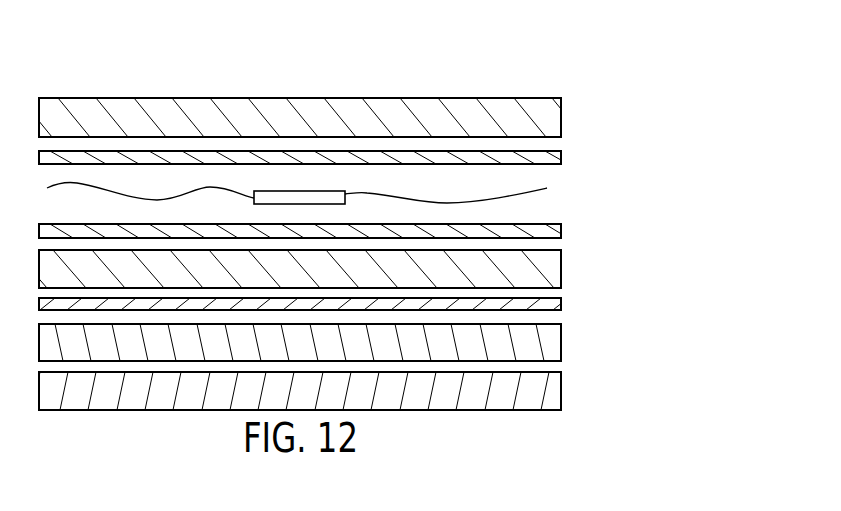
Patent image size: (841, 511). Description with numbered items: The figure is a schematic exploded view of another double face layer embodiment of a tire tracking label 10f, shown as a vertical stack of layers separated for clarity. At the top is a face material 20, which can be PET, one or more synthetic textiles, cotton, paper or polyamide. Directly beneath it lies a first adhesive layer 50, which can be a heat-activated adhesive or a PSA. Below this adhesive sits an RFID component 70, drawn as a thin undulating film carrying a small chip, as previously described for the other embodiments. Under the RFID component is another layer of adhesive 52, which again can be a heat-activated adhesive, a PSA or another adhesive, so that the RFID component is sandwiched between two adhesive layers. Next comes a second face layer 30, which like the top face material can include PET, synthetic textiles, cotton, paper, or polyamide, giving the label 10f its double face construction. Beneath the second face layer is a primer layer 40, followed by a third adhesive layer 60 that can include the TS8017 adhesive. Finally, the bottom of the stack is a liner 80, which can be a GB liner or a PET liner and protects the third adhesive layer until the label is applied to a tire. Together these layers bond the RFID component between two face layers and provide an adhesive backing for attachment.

The label 10f is at (658, 110).
The face material 20 is at (561, 117).
The first adhesive layer 50 is at (561, 158).
The RFID component 70 is at (572, 193).
The layer of adhesive 52 is at (561, 231).
The second face layer 30 is at (561, 270).
The primer layer 40 is at (561, 305).
The third adhesive layer 60 is at (561, 345).
The liner 80 is at (561, 386).